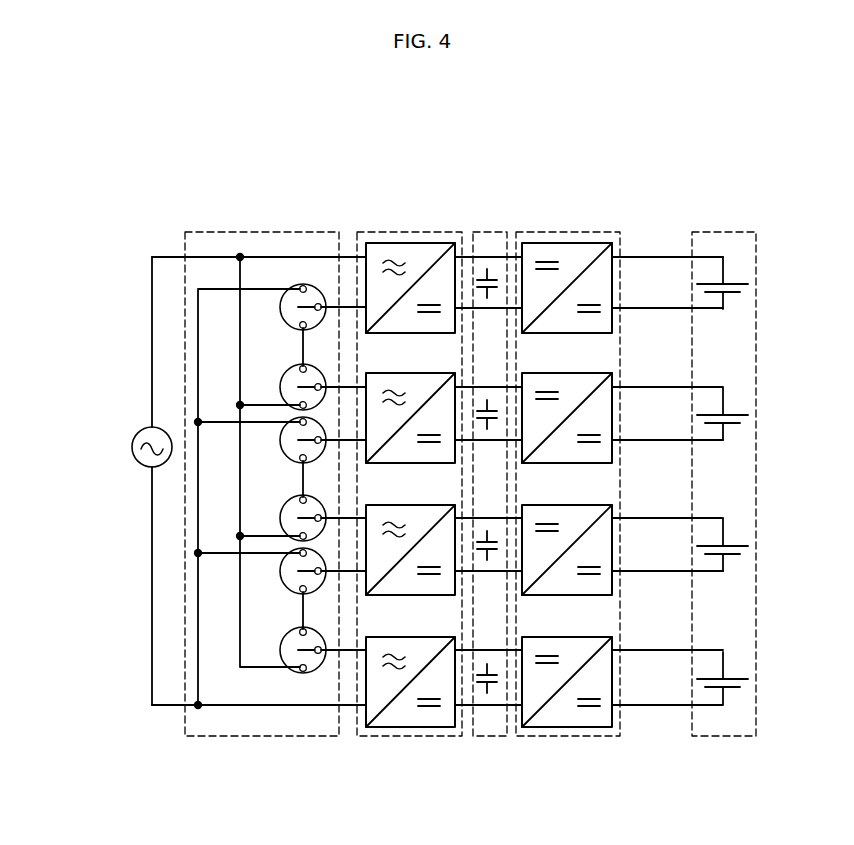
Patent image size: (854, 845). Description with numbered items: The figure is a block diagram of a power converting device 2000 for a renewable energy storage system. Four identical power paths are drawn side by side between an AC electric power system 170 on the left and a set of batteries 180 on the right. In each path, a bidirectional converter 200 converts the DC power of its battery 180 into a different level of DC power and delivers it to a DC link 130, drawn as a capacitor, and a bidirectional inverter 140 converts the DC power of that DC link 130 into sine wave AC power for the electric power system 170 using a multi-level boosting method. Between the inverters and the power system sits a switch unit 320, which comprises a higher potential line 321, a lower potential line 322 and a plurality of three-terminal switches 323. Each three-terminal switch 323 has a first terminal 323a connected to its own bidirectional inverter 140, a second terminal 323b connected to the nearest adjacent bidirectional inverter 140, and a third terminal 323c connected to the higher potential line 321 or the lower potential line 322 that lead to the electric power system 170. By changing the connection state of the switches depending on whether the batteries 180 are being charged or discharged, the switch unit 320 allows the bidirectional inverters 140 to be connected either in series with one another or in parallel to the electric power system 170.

The power converting device 2000 is at (827, 142).
The electric power system 170 is at (138, 432).
The switch unit 320 is at (185, 231).
The higher potential line 321 is at (240, 357).
The lower potential line 322 is at (198, 357).
The three-terminal switch 323 is at (70, 691).
The first terminal 323a is at (296, 650).
The second terminal 323b is at (298, 632).
The third terminal 323c is at (298, 668).
The bidirectional inverter 140 is at (357, 231).
The DC link 130 is at (473, 231).
The bidirectional converter 200 is at (620, 231).
The battery 180 is at (756, 231).